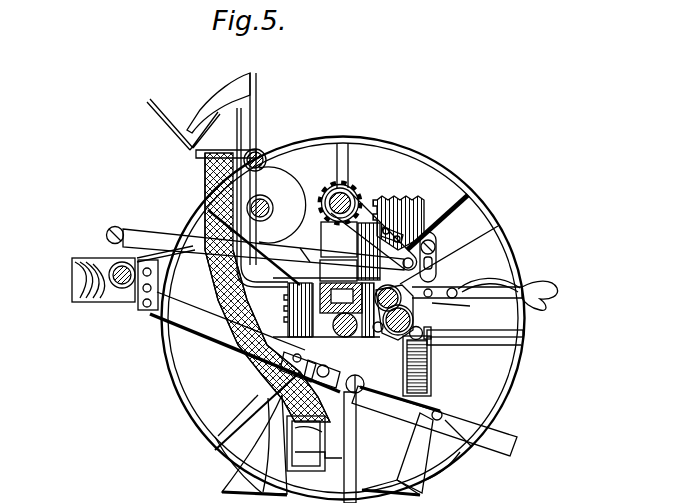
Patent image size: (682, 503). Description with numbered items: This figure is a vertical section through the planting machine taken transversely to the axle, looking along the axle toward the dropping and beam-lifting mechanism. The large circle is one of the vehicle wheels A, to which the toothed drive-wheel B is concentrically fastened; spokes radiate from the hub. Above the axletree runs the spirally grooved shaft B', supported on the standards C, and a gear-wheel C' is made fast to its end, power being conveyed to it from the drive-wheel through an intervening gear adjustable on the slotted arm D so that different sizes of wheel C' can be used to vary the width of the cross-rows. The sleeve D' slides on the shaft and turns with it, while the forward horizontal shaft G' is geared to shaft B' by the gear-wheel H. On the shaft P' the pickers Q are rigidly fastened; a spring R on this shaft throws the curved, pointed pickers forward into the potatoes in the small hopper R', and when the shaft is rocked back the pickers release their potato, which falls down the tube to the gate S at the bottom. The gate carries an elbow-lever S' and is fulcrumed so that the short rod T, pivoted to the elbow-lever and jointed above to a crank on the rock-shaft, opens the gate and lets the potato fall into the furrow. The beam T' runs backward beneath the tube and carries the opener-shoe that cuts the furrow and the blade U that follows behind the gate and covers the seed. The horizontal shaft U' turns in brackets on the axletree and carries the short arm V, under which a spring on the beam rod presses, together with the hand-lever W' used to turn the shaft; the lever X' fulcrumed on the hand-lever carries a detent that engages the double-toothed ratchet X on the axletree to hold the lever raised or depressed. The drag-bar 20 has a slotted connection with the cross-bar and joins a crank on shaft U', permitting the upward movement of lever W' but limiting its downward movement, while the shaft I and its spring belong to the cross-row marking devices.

The wheel A is at (492, 247).
The drive-wheel B is at (267, 287).
The shaft B' is at (346, 168).
The standard C is at (350, 251).
The gear-wheel C' is at (374, 221).
The slotted arm D is at (436, 211).
The horizontal tube or sleeve D' is at (286, 199).
The horizontal shaft G' is at (265, 218).
The gear-wheel H is at (270, 176).
The shaft I is at (123, 286).
The rod P is at (305, 245).
The shaft P' is at (210, 162).
The picker Q is at (257, 104).
The spring R is at (394, 306).
The small hopper R' is at (169, 124).
The gate S is at (315, 362).
The elbow-lever S' is at (359, 439).
The short rod T is at (326, 307).
The beam T' is at (443, 421).
The blade U is at (411, 454).
The horizontal shaft U' is at (489, 273).
The short arm V is at (353, 330).
The spring W is at (422, 346).
The hand-lever W' is at (496, 280).
The double-toothed ratchet X is at (488, 339).
The lever X' is at (534, 279).
The drag-bar 20 is at (312, 225).